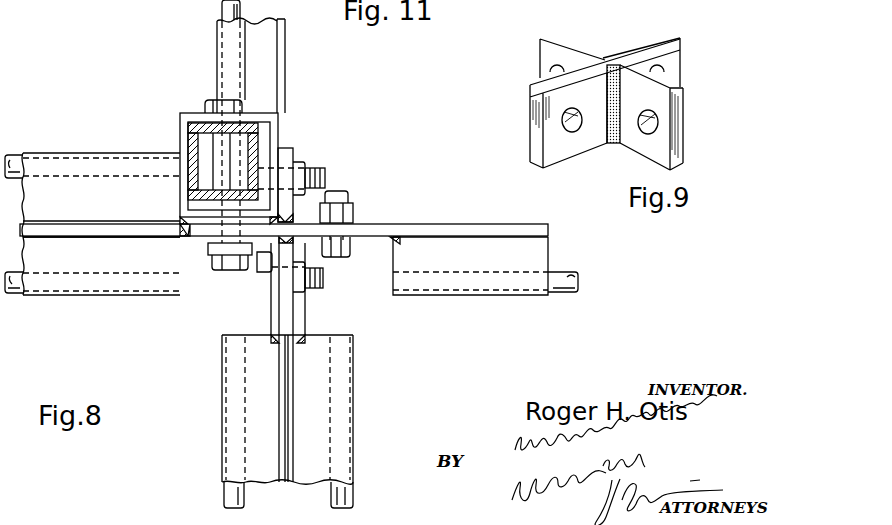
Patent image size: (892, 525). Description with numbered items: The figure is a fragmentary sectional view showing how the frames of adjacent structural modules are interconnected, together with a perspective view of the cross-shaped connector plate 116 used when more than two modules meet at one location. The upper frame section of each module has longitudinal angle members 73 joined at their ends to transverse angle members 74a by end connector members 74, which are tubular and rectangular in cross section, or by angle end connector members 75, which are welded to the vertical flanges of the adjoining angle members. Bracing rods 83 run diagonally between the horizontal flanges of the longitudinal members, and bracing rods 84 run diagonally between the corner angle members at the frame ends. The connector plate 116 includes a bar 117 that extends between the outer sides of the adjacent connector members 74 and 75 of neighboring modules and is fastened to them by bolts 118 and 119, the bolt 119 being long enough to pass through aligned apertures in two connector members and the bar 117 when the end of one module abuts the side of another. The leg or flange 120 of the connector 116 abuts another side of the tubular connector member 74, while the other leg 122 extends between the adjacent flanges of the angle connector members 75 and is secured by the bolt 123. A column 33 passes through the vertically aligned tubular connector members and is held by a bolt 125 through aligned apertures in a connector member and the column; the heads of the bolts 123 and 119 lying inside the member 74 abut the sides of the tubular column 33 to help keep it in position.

In FIG. 8, the column 33 is at (193, 137).
In FIG. 8, the longitudinal angle member 73 is at (282, 62).
In FIG. 8, the end connector member 74 is at (279, 146).
In FIG. 8, the transverse angle member 74a is at (88, 123).
In FIG. 8, the end connector member 75 is at (194, 252).
In FIG. 8, the bracing rod 83 is at (240, 12).
In FIG. 8, the bracing rod 84 is at (32, 123).
In FIG. 8, the cross-shaped connector plate 116 is at (370, 221).
In FIG. 9, the cross-shaped connector plate 116 is at (694, 31).
In FIG. 8, the bar 117 is at (336, 227).
In FIG. 9, the bar 117 is at (560, 153).
In FIG. 8, the bolt 118 is at (342, 258).
In FIG. 8, the bolt 119 is at (237, 272).
In FIG. 8, the leg or flange 120 is at (284, 160).
In FIG. 9, the leg or flange 120 is at (550, 36).
In FIG. 8, the leg 122 is at (287, 298).
In FIG. 9, the leg 122 is at (685, 142).
In FIG. 8, the bolt 123 is at (326, 178).
In FIG. 8, the bolt 125 is at (207, 100).